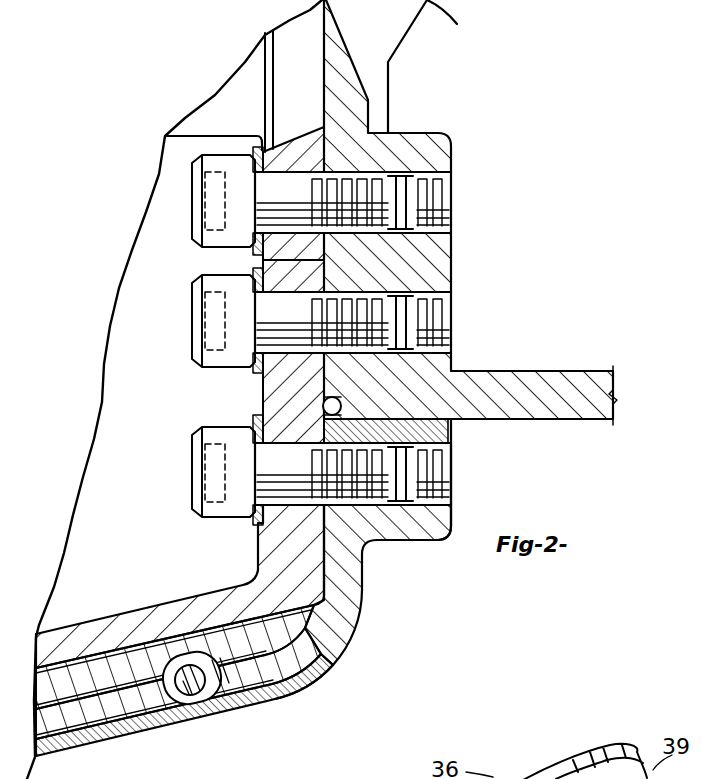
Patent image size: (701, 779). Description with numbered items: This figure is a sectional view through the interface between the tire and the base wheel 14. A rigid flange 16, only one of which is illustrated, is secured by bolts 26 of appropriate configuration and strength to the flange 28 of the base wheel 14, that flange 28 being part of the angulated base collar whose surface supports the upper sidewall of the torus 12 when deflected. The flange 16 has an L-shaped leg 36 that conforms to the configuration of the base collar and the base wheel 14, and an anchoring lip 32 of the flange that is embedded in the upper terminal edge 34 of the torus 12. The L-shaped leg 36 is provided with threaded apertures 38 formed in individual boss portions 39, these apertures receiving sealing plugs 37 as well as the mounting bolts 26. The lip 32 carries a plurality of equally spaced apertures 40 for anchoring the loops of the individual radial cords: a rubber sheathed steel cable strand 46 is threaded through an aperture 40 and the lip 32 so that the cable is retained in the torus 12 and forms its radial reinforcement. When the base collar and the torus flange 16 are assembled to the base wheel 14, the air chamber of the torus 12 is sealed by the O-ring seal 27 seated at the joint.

The torus 12 is at (80, 742).
The base wheel 14 is at (565, 378).
The rigid flange 16 is at (326, 334).
The bolt 26 is at (233, 503).
The O-ring seal 27 is at (324, 404).
The flange of the base wheel 28 is at (290, 395).
The anchoring lip 32 is at (334, 663).
The upper terminal edge of the torus 34 is at (294, 692).
The L-shaped leg 36 is at (363, 598).
The sealing plug 37 is at (452, 458).
The threaded aperture 38 is at (402, 542).
The boss portion 39 is at (449, 522).
The aperture 40 is at (233, 700).
The rubber sheathed steel cable strand 46 is at (143, 725).